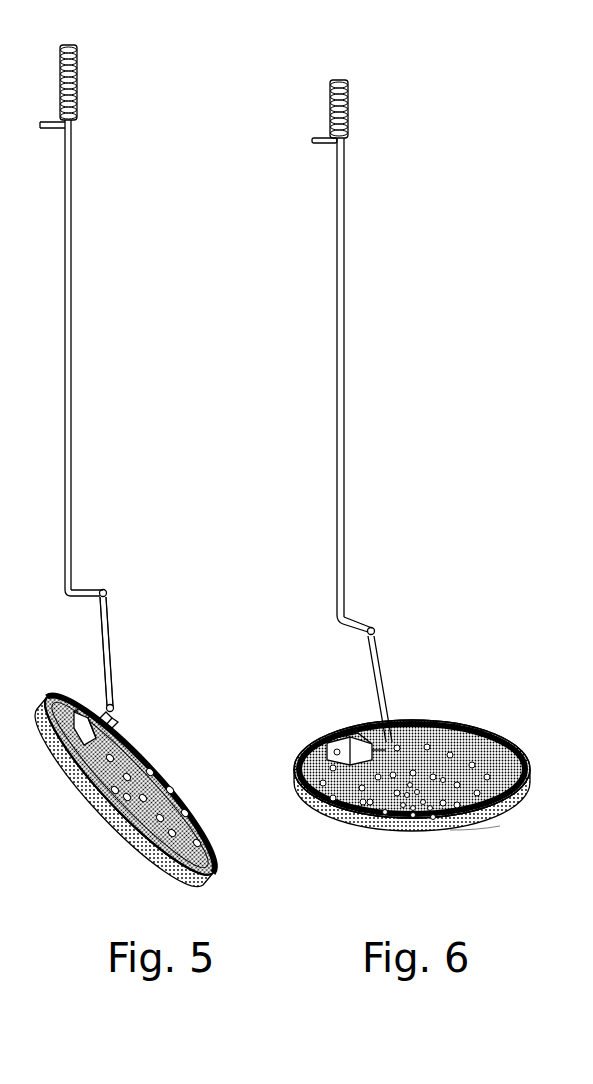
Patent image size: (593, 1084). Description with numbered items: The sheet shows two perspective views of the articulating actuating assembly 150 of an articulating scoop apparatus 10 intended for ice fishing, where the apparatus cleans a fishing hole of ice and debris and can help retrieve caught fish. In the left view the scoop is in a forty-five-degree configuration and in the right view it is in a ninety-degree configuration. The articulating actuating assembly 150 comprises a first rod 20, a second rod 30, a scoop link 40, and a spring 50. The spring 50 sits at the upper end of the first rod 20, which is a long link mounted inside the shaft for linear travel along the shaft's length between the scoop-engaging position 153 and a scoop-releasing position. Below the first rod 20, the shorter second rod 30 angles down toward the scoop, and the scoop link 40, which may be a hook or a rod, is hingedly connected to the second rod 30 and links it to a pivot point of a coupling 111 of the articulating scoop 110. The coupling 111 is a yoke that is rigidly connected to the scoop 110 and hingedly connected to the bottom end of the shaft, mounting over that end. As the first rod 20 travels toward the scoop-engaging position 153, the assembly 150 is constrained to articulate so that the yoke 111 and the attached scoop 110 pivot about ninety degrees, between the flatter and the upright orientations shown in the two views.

In FIG. 5, the spring 50 is at (76, 58).
In FIG. 6, the spring 50 is at (348, 85).
In FIG. 5, the first rod 20 is at (110, 57).
In FIG. 5, the second rod 30 is at (100, 640).
In FIG. 5, the scoop link 40 is at (113, 722).
In FIG. 5, the articulating scoop apparatus 10 is at (129, 784).
In FIG. 6, the articulating actuating assembly 150 is at (383, 83).
In FIG. 6, the coupling 111 is at (337, 735).
In FIG. 6, the articulating scoop 110 is at (378, 826).
In FIG. 6, the scoop-engaging position 153 is at (467, 847).